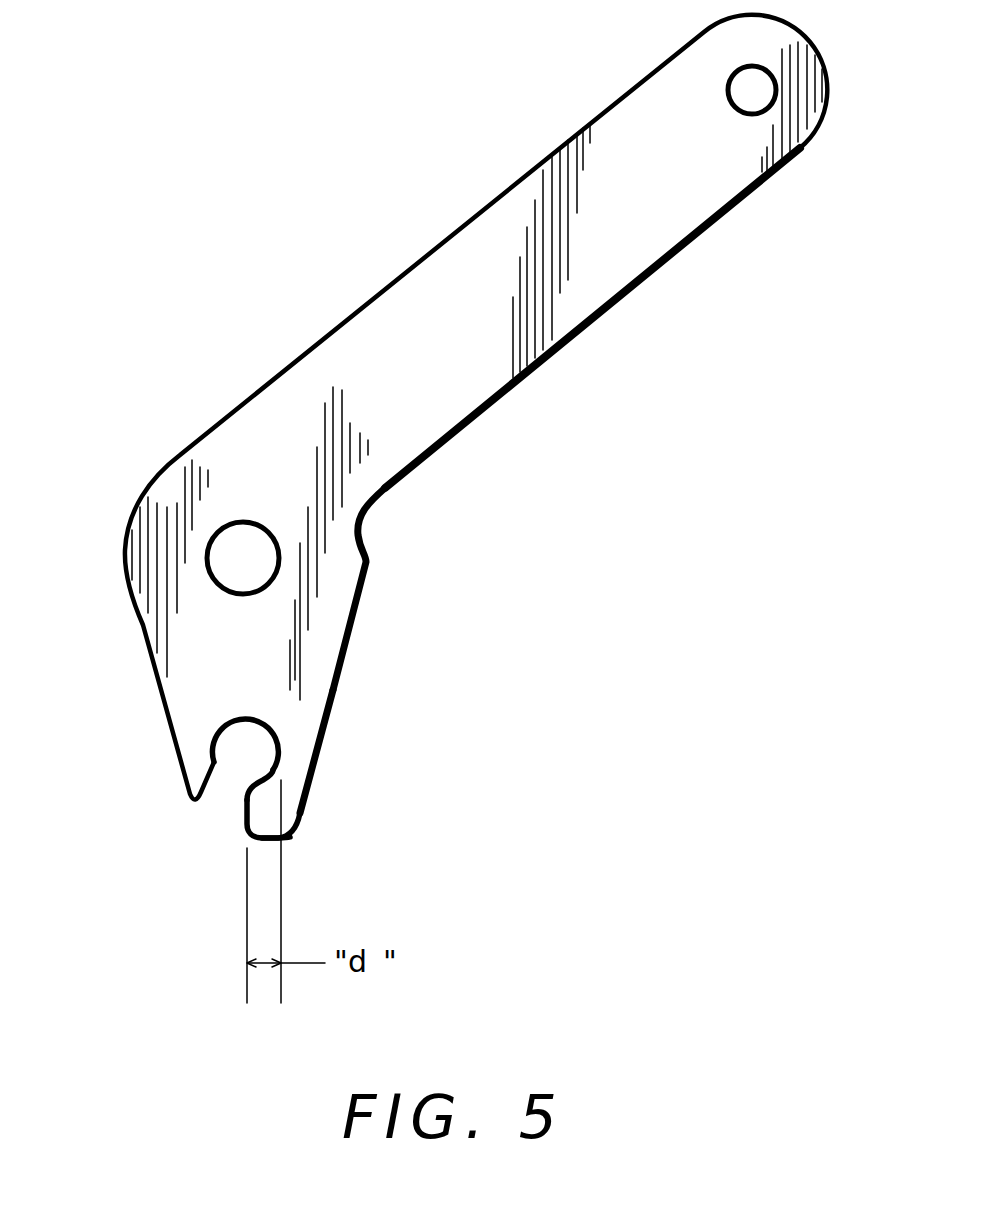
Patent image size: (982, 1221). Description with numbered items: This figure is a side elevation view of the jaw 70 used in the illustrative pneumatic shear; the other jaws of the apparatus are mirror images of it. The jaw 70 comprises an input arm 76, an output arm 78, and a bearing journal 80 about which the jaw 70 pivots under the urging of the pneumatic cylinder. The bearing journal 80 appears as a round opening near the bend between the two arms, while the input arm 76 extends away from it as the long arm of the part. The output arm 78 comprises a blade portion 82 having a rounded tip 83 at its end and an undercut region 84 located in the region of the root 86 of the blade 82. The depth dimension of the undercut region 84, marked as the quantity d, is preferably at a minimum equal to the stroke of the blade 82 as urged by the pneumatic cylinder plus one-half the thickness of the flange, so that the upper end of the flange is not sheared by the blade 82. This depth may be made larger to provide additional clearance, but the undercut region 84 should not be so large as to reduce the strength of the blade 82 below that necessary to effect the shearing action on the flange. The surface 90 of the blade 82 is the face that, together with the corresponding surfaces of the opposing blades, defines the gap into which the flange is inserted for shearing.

The jaw 70 is at (698, 233).
The input arm 76 is at (562, 147).
The output arm 78 is at (332, 698).
The bearing journal 80 is at (213, 533).
The blade portion 82 is at (257, 812).
The rounded tip 83 is at (270, 840).
The undercut region 84 is at (250, 716).
The root 86 is at (310, 730).
The surface 90 is at (247, 793).